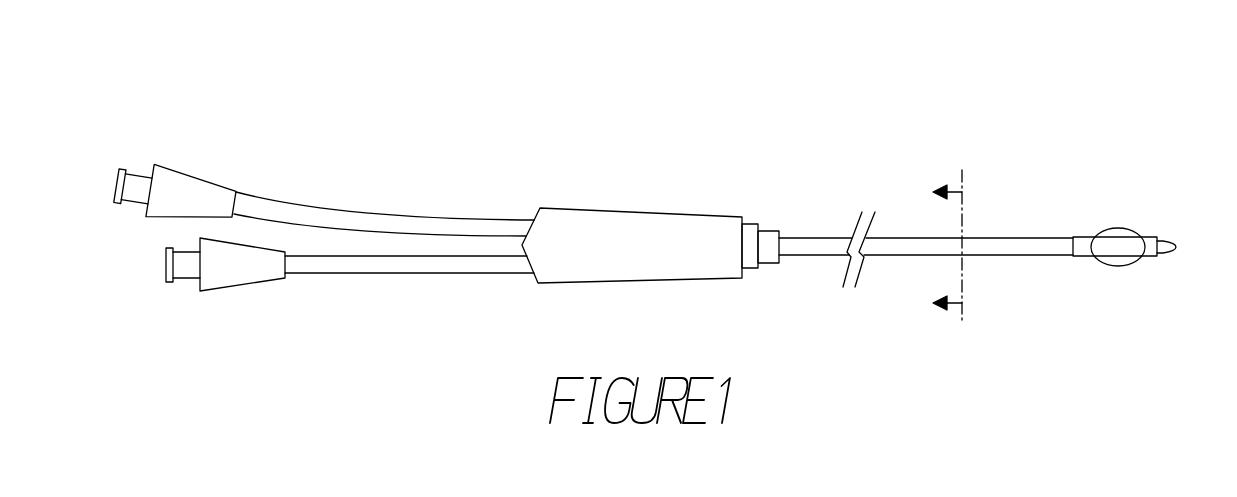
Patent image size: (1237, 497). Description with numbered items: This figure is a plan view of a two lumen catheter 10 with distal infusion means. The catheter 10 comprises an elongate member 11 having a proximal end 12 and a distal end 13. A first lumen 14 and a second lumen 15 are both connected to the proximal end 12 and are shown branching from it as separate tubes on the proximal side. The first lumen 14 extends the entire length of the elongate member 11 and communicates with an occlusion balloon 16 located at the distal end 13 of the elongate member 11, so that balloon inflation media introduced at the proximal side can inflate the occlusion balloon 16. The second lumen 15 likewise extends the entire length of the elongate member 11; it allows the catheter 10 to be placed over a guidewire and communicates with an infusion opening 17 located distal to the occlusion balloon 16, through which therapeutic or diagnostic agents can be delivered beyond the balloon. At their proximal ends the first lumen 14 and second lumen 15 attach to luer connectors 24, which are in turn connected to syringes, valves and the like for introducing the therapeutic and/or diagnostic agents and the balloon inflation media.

The catheter 10 is at (763, 117).
The elongate member 11 is at (820, 237).
The proximal end 12 is at (540, 207).
The distal end 13 is at (1168, 239).
The first lumen 14 is at (352, 208).
The second lumen 15 is at (381, 275).
The occlusion balloon 16 is at (1116, 229).
The infusion opening 17 is at (1176, 248).
The luer connectors 24 is at (188, 175).